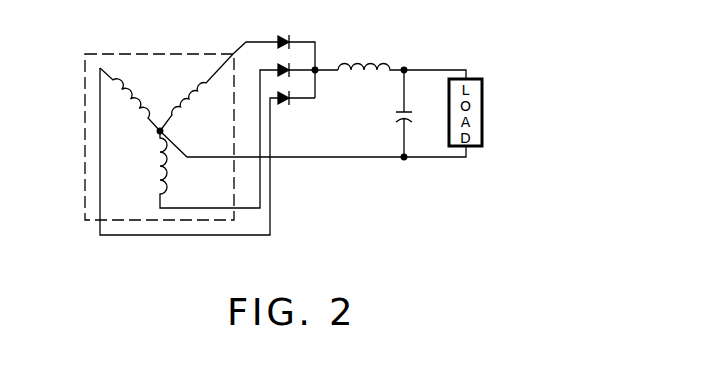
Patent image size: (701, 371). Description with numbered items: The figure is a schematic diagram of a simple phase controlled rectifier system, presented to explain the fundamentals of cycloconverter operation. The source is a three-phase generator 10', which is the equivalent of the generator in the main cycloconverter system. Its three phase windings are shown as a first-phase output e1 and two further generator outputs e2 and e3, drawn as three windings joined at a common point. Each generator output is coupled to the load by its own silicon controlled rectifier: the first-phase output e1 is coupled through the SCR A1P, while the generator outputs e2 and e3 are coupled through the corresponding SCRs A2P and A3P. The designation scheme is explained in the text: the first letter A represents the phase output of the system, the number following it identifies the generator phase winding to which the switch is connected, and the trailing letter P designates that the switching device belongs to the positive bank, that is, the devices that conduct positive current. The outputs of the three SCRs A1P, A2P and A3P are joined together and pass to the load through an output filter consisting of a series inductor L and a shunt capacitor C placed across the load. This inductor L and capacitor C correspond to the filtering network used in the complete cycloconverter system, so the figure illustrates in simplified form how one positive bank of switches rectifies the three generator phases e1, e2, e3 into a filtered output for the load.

The three-phase generator 10' is at (159, 121).
The Phase 1 output e1 is at (219, 86).
The generator output e2 is at (209, 139).
The generator output e3 is at (130, 93).
The SCR A1P is at (296, 57).
The SCR A2P is at (290, 65).
The SCR A3P is at (290, 102).
The series inductor L is at (402, 79).
The shunt capacitor C is at (394, 113).